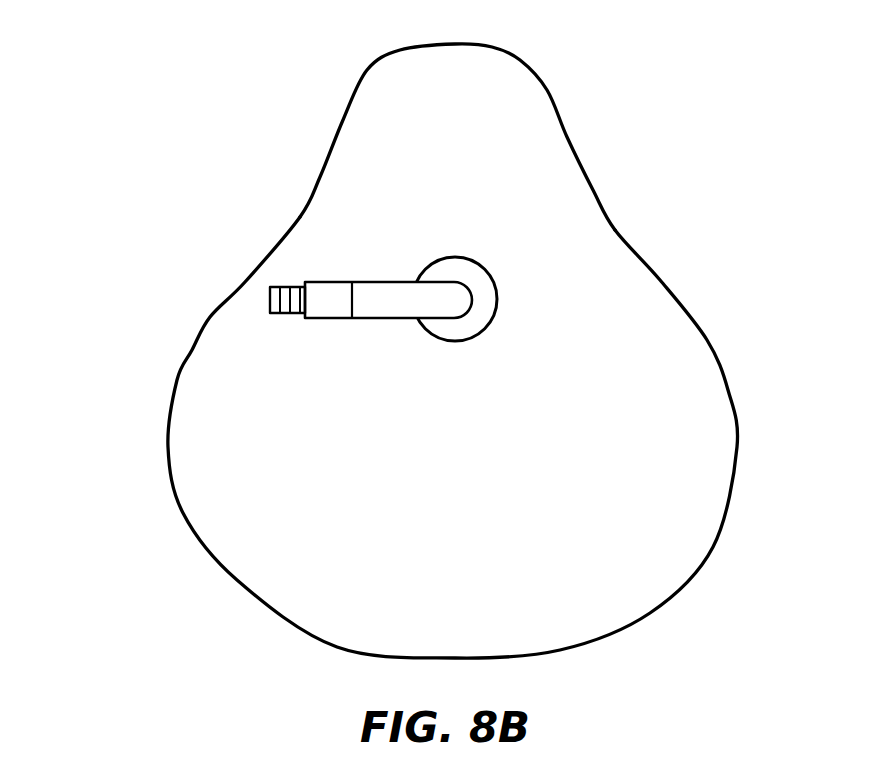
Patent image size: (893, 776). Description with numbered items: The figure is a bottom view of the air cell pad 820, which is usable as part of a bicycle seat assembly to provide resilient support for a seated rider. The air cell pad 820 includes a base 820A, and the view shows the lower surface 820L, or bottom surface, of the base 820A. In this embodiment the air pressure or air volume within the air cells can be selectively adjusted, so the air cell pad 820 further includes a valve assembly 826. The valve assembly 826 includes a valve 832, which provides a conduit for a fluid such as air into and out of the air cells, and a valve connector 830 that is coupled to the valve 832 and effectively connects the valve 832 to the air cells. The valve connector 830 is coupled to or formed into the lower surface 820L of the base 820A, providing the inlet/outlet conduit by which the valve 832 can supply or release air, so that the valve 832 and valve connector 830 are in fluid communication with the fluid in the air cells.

The air cell pad 820 is at (462, 351).
The base 820A is at (605, 215).
The lower surface 820L is at (680, 338).
The valve assembly 826 is at (376, 309).
The valve connector 830 is at (452, 282).
The valve 832 is at (332, 302).